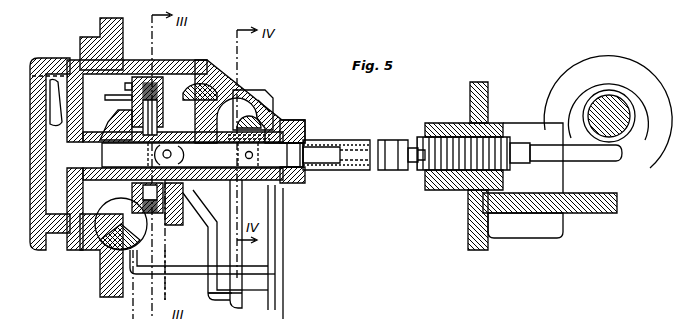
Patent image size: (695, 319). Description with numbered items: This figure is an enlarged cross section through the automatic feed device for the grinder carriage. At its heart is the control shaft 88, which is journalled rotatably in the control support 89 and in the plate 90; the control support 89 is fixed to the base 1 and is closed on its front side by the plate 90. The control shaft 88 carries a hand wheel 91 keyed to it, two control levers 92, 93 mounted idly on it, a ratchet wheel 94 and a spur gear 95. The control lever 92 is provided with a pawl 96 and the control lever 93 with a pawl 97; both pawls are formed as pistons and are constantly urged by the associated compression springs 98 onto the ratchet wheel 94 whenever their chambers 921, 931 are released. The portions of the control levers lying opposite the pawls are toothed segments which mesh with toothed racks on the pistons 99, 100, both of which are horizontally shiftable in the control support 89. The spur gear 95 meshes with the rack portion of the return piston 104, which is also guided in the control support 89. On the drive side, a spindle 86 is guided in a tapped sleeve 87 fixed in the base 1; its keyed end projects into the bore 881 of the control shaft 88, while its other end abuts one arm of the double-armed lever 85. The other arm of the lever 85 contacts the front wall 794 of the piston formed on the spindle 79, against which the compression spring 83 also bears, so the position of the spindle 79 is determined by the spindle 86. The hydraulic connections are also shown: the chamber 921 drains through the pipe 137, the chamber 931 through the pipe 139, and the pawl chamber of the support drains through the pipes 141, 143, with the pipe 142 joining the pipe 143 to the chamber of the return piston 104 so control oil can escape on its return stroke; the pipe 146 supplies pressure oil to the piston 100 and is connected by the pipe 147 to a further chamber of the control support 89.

The base 1 is at (486, 102).
The spindle 79 is at (632, 138).
The compression spring 83 is at (621, 138).
The double-armed lever 85 is at (583, 162).
The spindle 86 is at (402, 170).
The tapped sleeve 87 is at (445, 185).
The control shaft 88 is at (292, 120).
The control support 89 is at (305, 180).
The plate 90 is at (72, 62).
The hand wheel 91 is at (43, 60).
The control lever 92 is at (126, 118).
The control lever 93 is at (240, 148).
The ratchet wheel 94 is at (176, 150).
The spur gear 95 is at (260, 186).
The pawl 96 is at (132, 82).
The pawl 97 is at (175, 228).
The compression spring 98 is at (150, 76).
The piston 99 is at (82, 258).
The piston 100 is at (206, 62).
The return piston 104 is at (248, 92).
The pipe 137 is at (148, 284).
The pipe 139 is at (166, 290).
The pipe 141 is at (208, 293).
The pipe 142 is at (258, 266).
The pipe 143 is at (232, 293).
The pipe 146 is at (272, 272).
The pipe 147 is at (272, 110).
The front wall 794 is at (600, 80).
The bore 881 is at (327, 146).
The chamber 921 is at (132, 98).
The chamber 931 is at (190, 186).